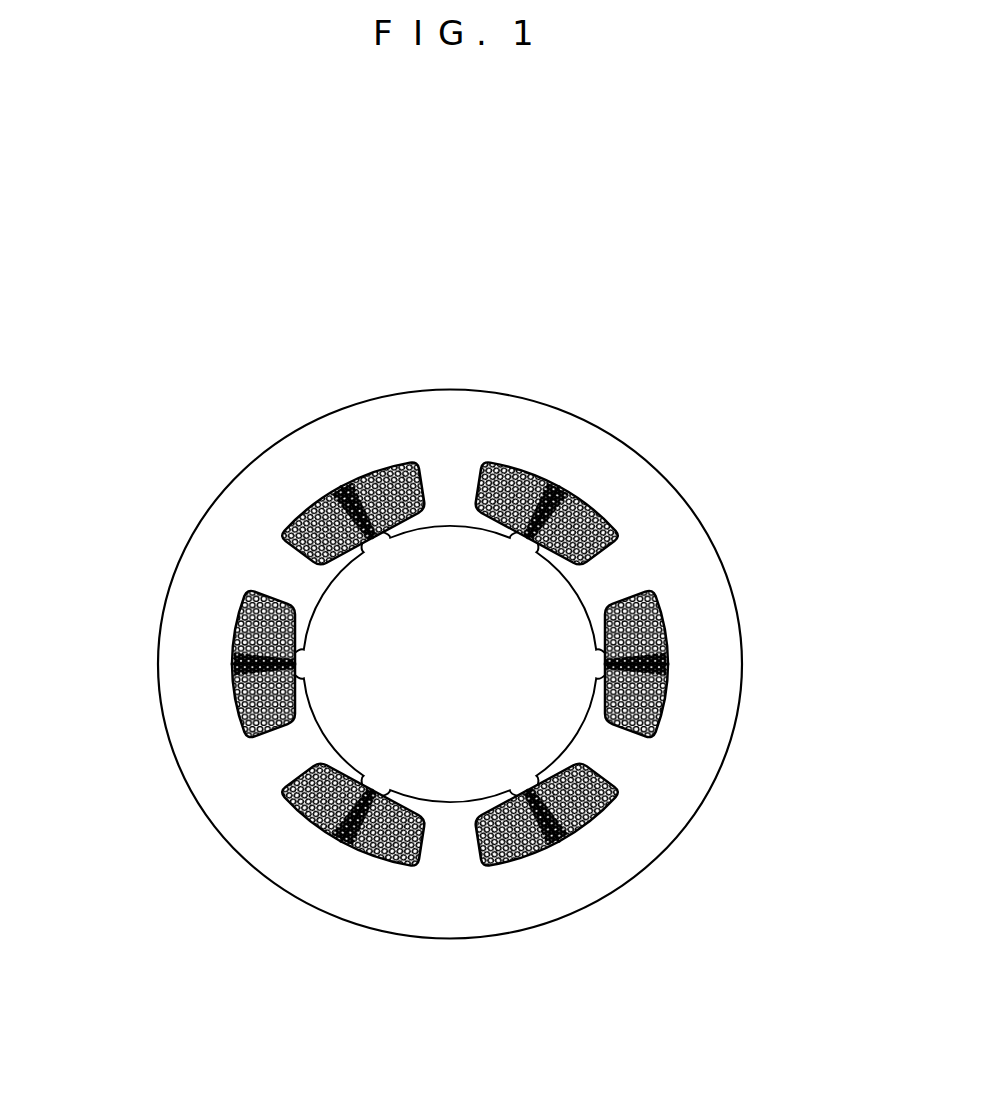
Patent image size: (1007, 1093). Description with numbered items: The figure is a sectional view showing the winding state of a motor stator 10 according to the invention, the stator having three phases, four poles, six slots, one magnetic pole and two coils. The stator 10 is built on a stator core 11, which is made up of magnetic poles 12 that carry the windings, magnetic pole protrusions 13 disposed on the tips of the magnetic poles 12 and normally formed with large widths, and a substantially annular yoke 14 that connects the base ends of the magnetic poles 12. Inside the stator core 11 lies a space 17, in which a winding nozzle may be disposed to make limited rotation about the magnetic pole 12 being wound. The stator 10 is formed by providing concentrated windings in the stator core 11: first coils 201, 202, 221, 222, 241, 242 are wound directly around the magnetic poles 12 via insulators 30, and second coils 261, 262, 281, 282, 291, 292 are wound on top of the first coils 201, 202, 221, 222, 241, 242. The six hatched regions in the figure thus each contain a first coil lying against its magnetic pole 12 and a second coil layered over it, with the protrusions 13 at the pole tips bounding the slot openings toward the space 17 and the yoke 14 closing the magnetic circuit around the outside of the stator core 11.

The stator 10 is at (695, 373).
The stator core 11 is at (528, 395).
The magnetic pole 12 is at (447, 488).
The magnetic pole protrusion 13 is at (480, 523).
The yoke 14 is at (530, 448).
The space 17 is at (515, 727).
The insulator 30 is at (618, 530).
The first coil 201 is at (360, 475).
The first coil 202 is at (532, 863).
The first coil 221 is at (233, 612).
The first coil 222 is at (667, 715).
The first coil 241 is at (298, 818).
The first coil 242 is at (665, 608).
The second coil 261 is at (378, 547).
The second coil 262 is at (570, 842).
The second coil 281 is at (232, 650).
The second coil 282 is at (672, 672).
The second coil 291 is at (332, 840).
The second coil 292 is at (672, 650).